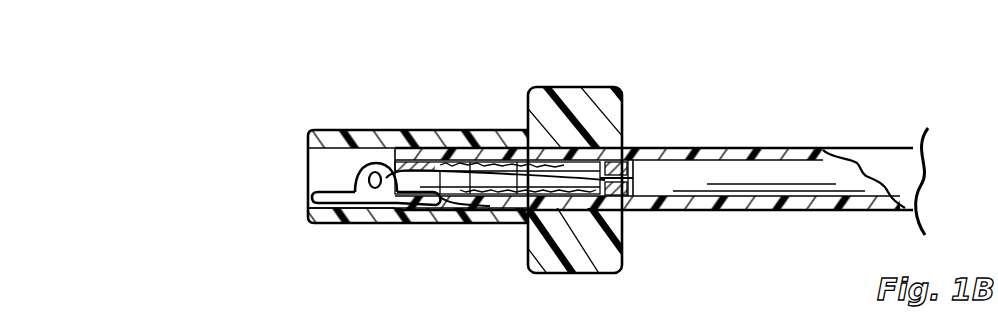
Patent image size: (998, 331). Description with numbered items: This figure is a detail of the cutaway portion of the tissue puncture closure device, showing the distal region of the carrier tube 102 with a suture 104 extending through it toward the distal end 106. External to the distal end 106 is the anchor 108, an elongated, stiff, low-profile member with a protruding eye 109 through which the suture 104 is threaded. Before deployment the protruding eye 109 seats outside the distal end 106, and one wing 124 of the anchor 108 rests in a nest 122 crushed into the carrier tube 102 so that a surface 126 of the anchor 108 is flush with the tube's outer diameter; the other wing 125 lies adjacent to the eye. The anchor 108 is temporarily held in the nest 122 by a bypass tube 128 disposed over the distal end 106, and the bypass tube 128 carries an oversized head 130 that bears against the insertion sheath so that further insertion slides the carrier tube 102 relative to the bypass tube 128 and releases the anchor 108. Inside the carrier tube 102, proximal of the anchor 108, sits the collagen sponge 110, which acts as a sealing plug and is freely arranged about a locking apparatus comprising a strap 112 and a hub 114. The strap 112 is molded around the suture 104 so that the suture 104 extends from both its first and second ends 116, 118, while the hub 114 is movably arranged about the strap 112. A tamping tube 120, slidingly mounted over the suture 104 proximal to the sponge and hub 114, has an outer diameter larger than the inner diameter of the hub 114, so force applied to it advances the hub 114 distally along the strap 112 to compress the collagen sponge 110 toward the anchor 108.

The carrier tube 102 is at (733, 205).
The suture 104 is at (452, 165).
The distal end 106 is at (432, 152).
The anchor 108 is at (352, 225).
The protruding eye 109 is at (362, 170).
The collagen sponge 110 is at (469, 165).
The strap 112 is at (516, 165).
The hub 114 is at (627, 160).
The first end of strap 116 is at (447, 177).
The second end of strap 118 is at (600, 165).
The tamping tube 120 is at (755, 183).
The nest 122 is at (443, 227).
The wing 124 is at (365, 199).
The wing 125 is at (316, 194).
The surface 126 is at (320, 225).
The bypass tube 128 is at (367, 142).
The oversized head 130 is at (613, 225).